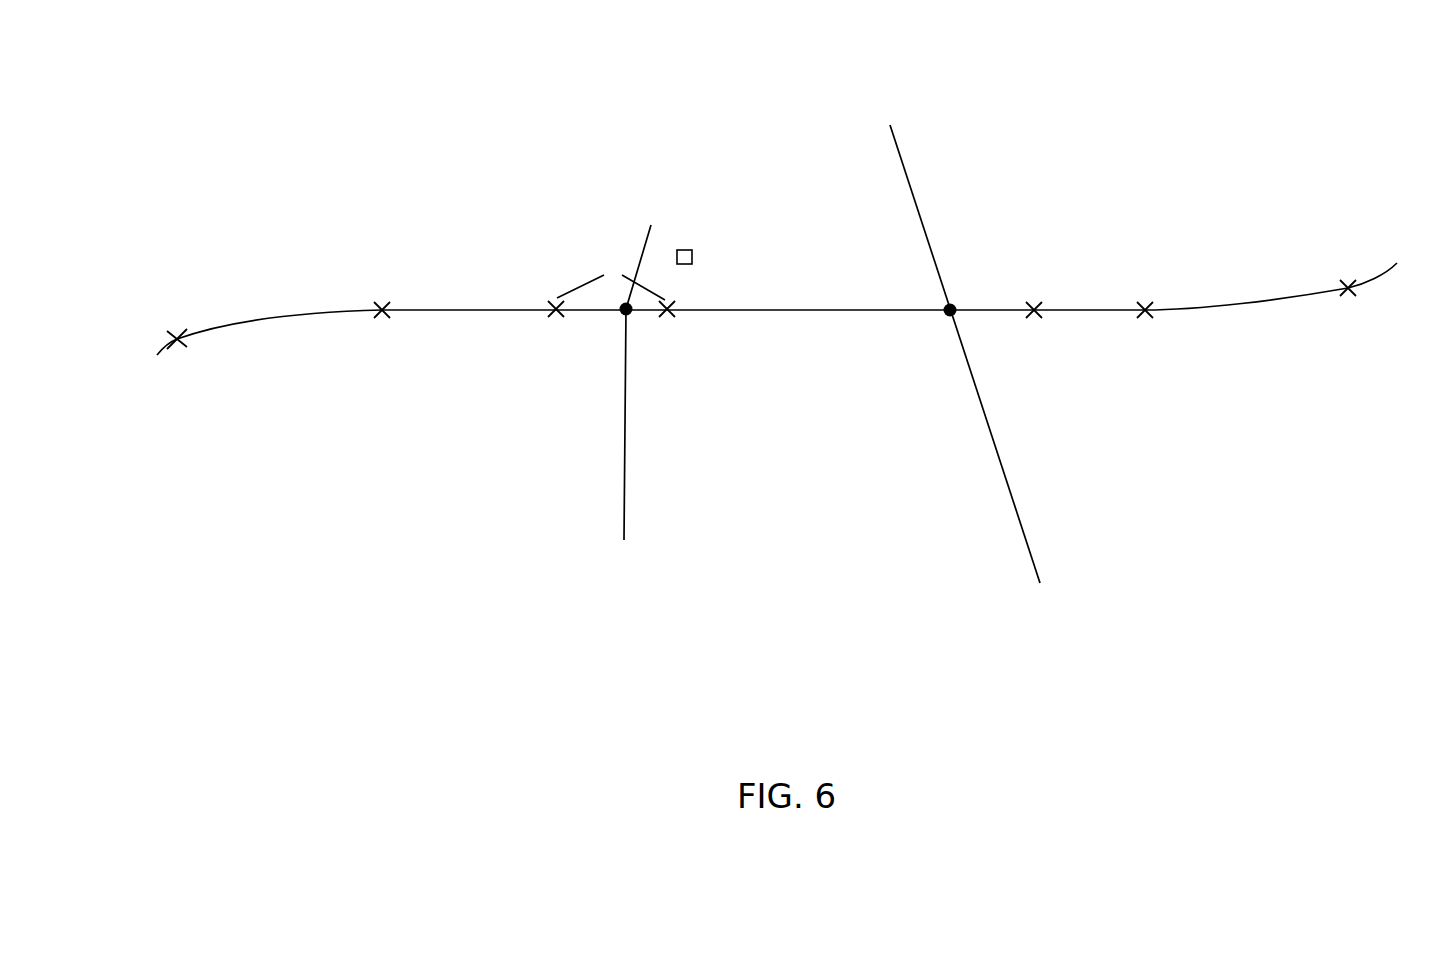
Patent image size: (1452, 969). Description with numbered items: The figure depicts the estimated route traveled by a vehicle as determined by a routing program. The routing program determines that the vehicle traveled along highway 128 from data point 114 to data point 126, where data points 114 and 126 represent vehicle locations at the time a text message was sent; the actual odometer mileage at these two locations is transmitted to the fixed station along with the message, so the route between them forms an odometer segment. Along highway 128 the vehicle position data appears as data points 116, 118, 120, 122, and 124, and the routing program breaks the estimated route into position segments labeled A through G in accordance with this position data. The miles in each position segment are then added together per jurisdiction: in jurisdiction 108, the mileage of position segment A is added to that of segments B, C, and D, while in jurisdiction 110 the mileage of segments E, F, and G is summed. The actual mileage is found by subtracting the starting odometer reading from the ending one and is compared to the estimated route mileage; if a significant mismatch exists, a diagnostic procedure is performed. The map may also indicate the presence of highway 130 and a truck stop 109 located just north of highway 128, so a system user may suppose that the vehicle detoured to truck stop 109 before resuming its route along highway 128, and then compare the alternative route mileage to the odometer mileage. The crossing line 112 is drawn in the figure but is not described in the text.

The jurisdiction 108 is at (402, 210).
The truck stop 109 is at (686, 250).
The jurisdiction 110 is at (1280, 160).
The crossing highway 112 is at (940, 212).
The data point 114 is at (180, 347).
The data point 116 is at (385, 317).
The data point 118 is at (559, 317).
The data point 120 is at (670, 317).
The data point 122 is at (1037, 318).
The data point 124 is at (1148, 318).
The data point 126 is at (1345, 298).
The highway 128 is at (1288, 292).
The highway 130 is at (637, 473).